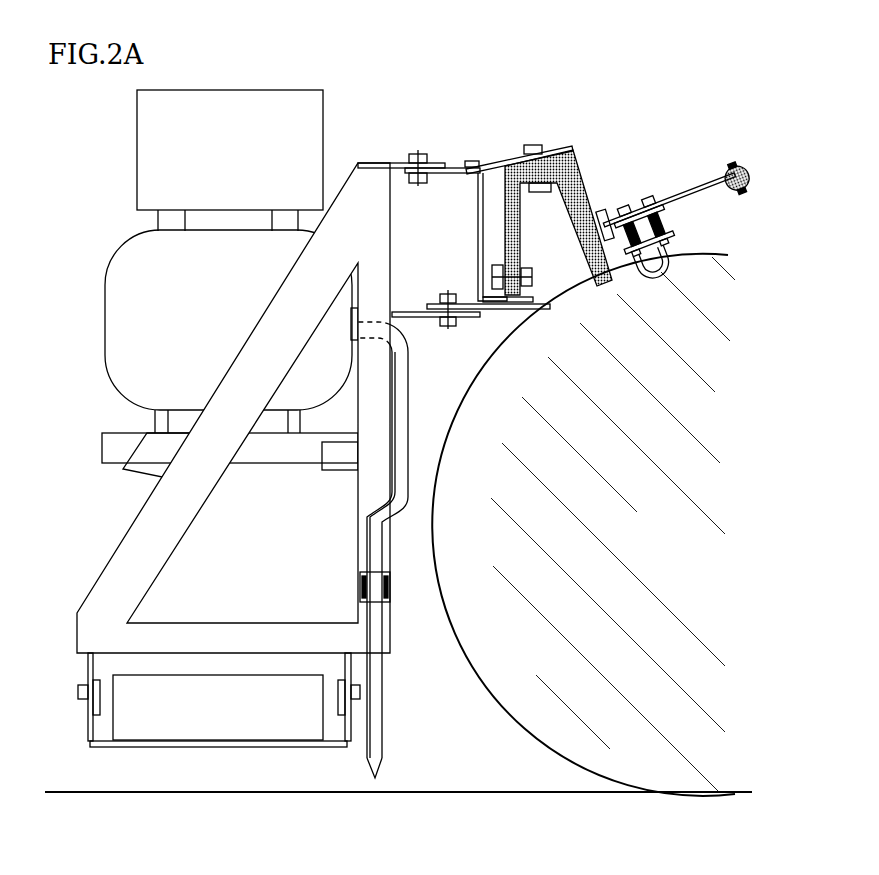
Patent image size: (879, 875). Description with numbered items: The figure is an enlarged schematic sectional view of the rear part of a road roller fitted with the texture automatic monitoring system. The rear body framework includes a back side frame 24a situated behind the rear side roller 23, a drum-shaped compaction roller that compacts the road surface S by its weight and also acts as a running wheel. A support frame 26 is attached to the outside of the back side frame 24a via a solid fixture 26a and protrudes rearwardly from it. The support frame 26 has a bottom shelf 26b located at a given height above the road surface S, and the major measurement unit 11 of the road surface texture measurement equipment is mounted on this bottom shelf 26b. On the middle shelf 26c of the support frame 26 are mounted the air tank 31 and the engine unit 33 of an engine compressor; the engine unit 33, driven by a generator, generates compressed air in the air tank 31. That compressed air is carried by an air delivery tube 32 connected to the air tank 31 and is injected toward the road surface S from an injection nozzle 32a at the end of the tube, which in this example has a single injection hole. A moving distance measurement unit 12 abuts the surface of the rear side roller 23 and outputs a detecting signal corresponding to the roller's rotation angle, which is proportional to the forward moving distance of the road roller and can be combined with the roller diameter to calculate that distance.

The major measurement unit 11 is at (224, 723).
The moving distance measurement unit 12 is at (635, 228).
The rear side roller 23 is at (683, 559).
The back side frame 24a is at (511, 238).
The support frame 26 is at (122, 535).
The solid fixture 26a is at (436, 165).
The bottom shelf 26b is at (194, 742).
The middle shelf 26c is at (122, 433).
The air tank 31 is at (233, 333).
The air delivery tube 32 is at (412, 437).
The injection nozzle 32a is at (382, 765).
The engine unit 33 is at (241, 158).
The road surface S is at (522, 790).